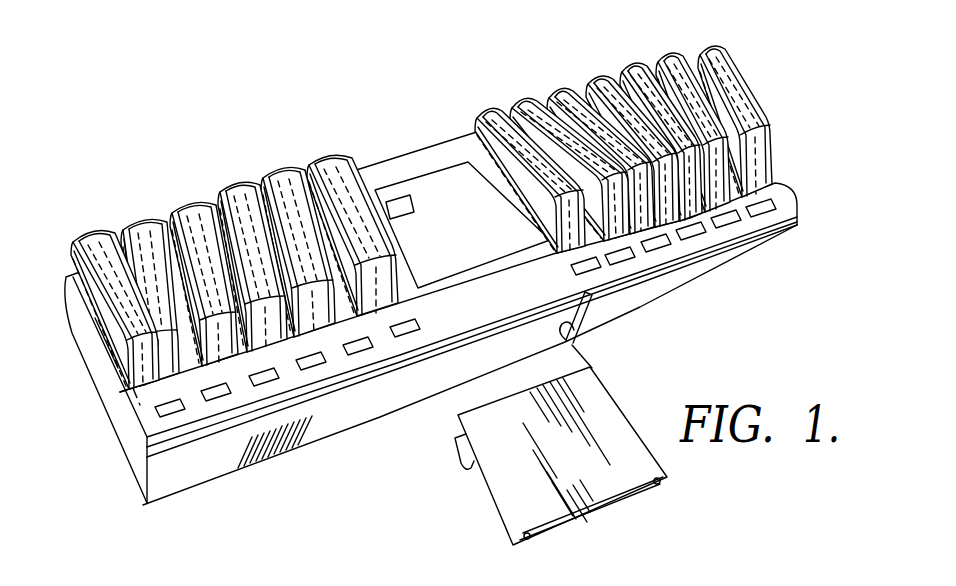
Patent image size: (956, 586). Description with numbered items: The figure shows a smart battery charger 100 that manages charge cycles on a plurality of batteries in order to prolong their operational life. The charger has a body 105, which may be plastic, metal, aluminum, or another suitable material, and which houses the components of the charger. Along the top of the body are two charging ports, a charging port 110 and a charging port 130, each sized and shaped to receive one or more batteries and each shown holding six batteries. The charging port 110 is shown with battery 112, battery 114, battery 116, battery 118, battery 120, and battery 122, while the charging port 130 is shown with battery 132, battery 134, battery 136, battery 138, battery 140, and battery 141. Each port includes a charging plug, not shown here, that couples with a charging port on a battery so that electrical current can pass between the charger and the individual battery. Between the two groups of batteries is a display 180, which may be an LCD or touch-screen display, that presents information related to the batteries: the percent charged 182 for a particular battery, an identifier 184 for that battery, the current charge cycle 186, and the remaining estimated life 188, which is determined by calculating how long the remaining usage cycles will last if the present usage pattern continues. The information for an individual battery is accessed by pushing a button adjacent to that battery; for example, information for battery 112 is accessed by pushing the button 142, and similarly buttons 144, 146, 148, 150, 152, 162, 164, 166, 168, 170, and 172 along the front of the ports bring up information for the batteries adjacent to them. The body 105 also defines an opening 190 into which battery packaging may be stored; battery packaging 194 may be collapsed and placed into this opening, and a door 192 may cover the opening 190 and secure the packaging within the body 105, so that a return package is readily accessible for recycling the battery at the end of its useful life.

The smart battery charger 100 is at (447, 280).
The body 105 is at (88, 360).
The charging port 110 is at (130, 377).
The battery 112 is at (95, 231).
The battery 114 is at (150, 216).
The battery 116 is at (205, 203).
The battery 118 is at (246, 188).
The battery 120 is at (292, 174).
The battery 122 is at (337, 158).
The charging port 130 is at (777, 183).
The battery 132 is at (487, 113).
The battery 134 is at (522, 99).
The battery 136 is at (562, 90).
The battery 138 is at (601, 75).
The battery 140 is at (639, 65).
The battery 141 is at (704, 47).
The button 142 is at (158, 412).
The button 144 is at (216, 402).
The button 146 is at (264, 387).
The button 148 is at (311, 371).
The button 150 is at (358, 357).
The button 152 is at (405, 338).
The button 162 is at (586, 276).
The button 164 is at (620, 266).
The button 166 is at (656, 253).
The button 168 is at (691, 241).
The button 170 is at (726, 229).
The button 172 is at (761, 218).
The display 180 is at (469, 220).
The percent charged 182 is at (397, 196).
The identifier 184 is at (478, 243).
The current charge cycle 186 is at (482, 250).
The remaining estimated life 188 is at (444, 258).
The opening 190 is at (575, 347).
The door 192 is at (454, 439).
The battery packaging 194 is at (635, 498).